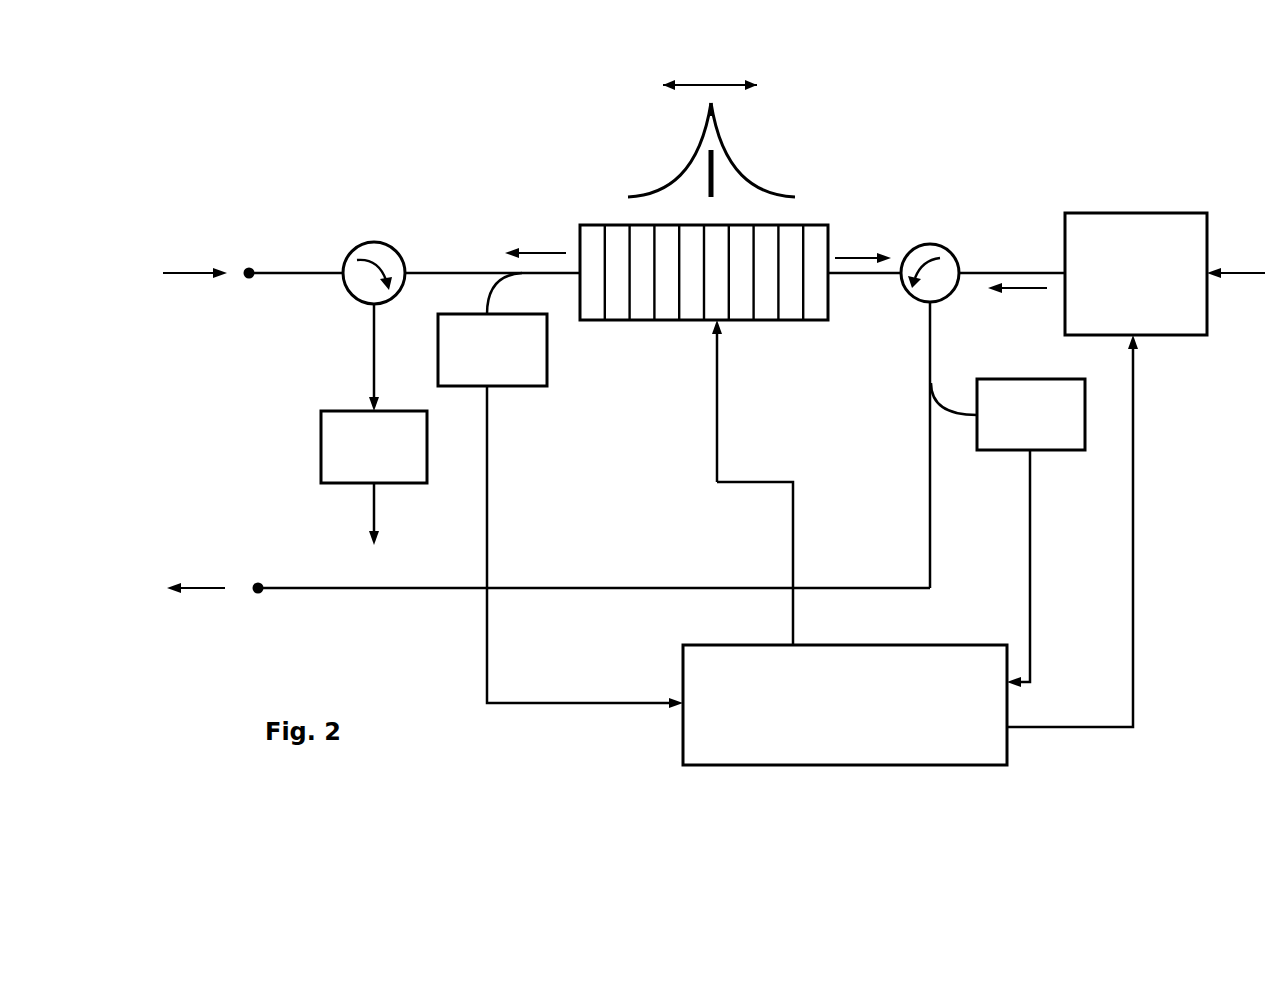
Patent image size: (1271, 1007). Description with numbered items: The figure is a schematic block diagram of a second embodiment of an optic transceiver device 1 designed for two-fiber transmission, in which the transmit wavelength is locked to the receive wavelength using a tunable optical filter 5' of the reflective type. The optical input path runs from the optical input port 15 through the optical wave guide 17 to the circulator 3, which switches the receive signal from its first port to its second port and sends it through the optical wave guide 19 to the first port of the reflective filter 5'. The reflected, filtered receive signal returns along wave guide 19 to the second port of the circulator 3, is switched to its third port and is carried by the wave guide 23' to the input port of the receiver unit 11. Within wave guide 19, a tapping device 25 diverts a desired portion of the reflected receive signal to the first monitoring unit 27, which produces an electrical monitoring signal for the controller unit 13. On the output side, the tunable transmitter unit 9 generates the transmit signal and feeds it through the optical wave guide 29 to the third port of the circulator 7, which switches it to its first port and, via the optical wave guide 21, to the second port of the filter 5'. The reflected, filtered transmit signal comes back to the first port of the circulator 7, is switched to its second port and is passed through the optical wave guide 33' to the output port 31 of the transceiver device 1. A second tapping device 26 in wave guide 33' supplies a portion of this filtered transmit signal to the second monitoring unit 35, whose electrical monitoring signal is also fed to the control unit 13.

The transceiver device 1 is at (948, 132).
The circulator 3 is at (384, 251).
The tunable optical filter 5' is at (704, 292).
The circulator 7 is at (932, 250).
The transmitter unit 9 is at (1184, 230).
The receiver unit 11 is at (321, 437).
The controller unit 13 is at (870, 745).
The optical input port 15 is at (250, 268).
The optical wave guide 17 is at (295, 276).
The optical wave guide 19 is at (450, 271).
The optical wave guide 21 is at (868, 276).
The wave guide 23' is at (339, 357).
The tapping device 25 is at (515, 289).
The tapping device 26 is at (952, 373).
The first monitoring unit 27 is at (522, 378).
The optical wave guide 29 is at (1010, 270).
The output port 31 is at (257, 596).
The optical wave guide 33' is at (594, 445).
The second monitoring unit 35 is at (1065, 441).